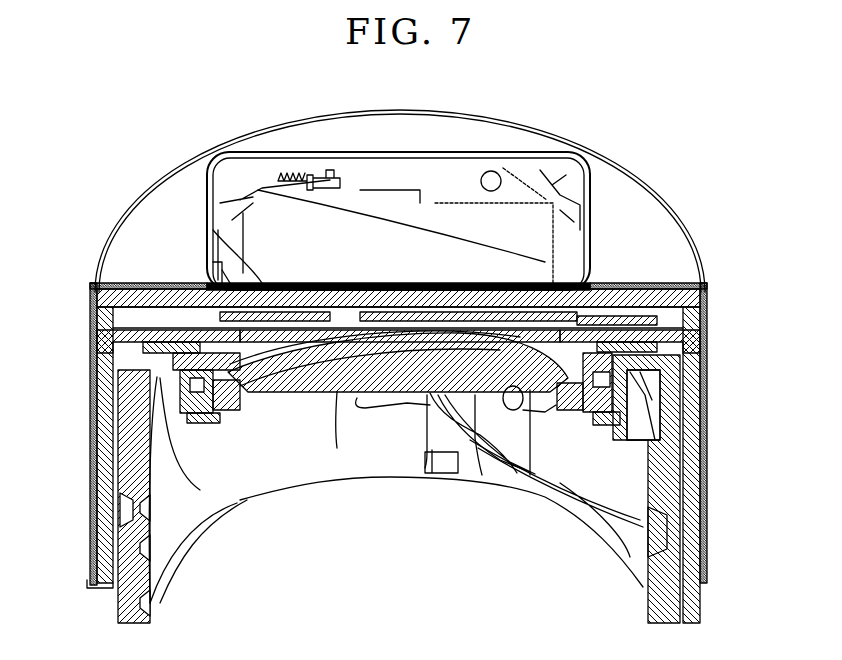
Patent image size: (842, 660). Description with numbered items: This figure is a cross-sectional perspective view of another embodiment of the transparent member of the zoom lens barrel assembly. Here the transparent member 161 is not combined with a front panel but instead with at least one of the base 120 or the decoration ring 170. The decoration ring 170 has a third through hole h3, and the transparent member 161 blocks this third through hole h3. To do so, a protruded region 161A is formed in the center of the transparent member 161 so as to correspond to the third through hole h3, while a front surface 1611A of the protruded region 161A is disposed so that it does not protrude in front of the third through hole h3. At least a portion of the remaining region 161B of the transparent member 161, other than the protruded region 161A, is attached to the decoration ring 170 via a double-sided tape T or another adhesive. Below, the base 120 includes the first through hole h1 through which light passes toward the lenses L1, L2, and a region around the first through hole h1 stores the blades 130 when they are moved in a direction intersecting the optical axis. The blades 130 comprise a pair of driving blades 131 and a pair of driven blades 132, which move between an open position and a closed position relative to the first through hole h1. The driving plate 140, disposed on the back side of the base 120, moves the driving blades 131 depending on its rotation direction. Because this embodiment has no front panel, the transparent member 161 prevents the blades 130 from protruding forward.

The decoration ring 170 is at (672, 196).
The transparent member 161 is at (546, 157).
The protruded region 161A is at (230, 282).
The remaining region 161B is at (160, 283).
The front surface 1611A is at (297, 283).
The third through hole h3 is at (577, 217).
The double-sided tape T is at (118, 283).
The base 120 is at (677, 328).
The driving plate 140 is at (666, 354).
The blades 130 is at (352, 560).
The driving blades 131 is at (337, 450).
The driven blades 132 is at (262, 400).
The lens L1 is at (482, 475).
The lens L2 is at (426, 468).
The first through hole h1 is at (530, 475).